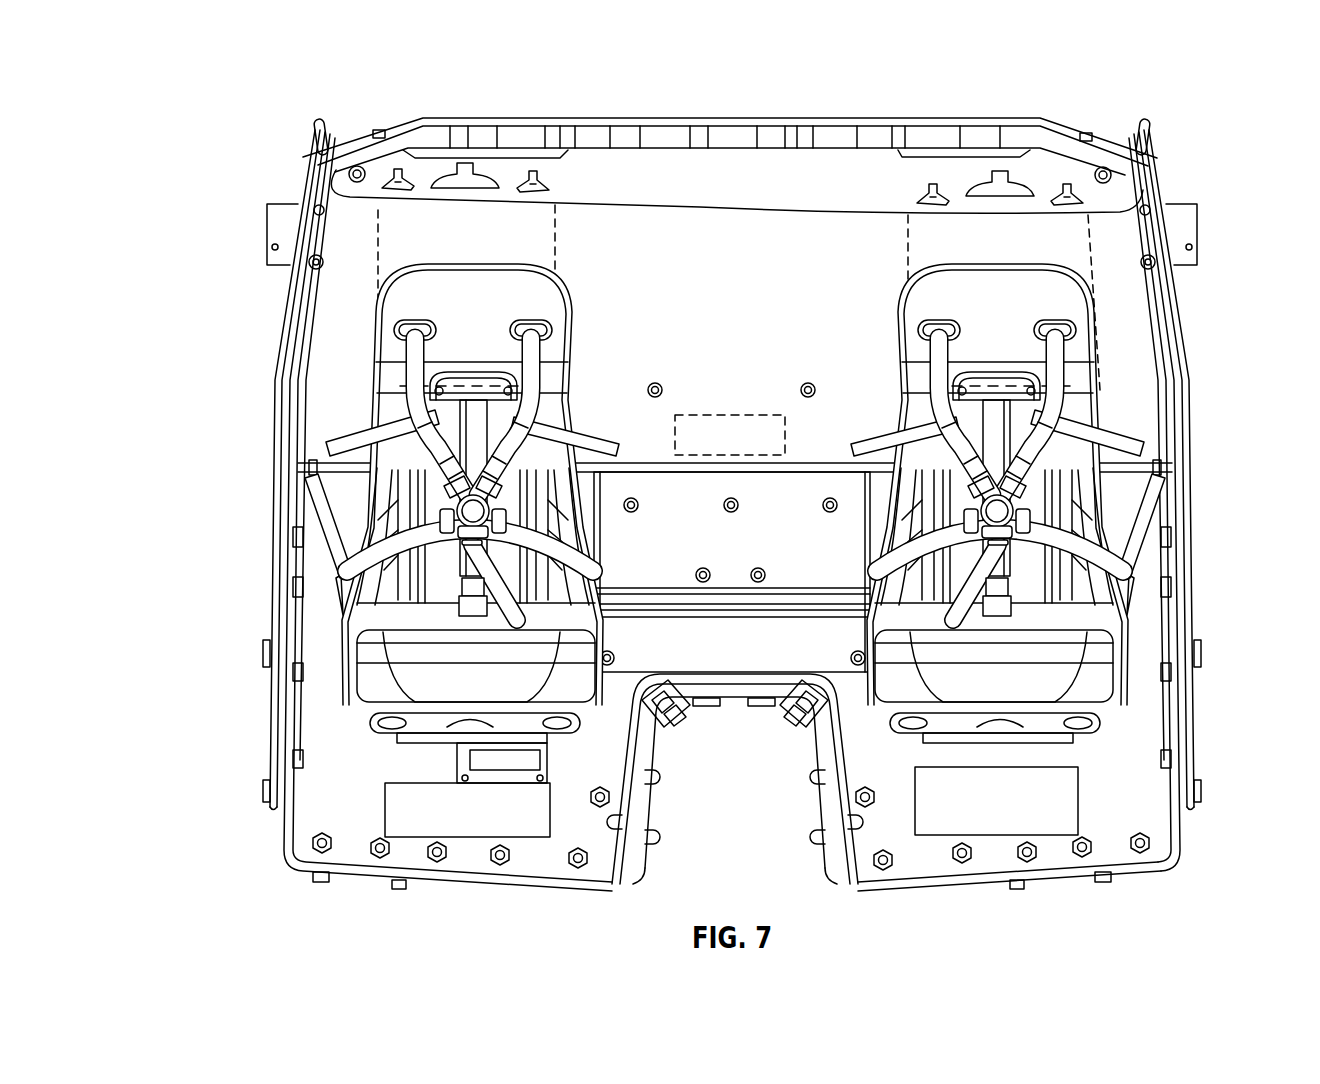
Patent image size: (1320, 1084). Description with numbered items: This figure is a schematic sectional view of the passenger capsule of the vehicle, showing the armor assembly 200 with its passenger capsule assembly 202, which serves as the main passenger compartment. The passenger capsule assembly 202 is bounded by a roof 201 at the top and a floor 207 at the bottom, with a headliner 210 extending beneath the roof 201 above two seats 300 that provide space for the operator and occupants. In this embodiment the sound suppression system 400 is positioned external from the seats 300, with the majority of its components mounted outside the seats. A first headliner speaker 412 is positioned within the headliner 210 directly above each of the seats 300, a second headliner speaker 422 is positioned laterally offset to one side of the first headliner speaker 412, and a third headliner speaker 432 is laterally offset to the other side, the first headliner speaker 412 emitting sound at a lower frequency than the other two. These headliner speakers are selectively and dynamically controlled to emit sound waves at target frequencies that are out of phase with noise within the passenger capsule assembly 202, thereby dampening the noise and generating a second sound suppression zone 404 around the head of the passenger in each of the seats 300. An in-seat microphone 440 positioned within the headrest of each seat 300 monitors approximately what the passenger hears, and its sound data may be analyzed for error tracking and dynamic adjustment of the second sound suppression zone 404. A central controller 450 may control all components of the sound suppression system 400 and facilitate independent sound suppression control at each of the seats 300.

The armor assembly 200 is at (246, 78).
The roof 201 is at (815, 118).
The passenger capsule assembly 202 is at (1160, 178).
The floor 207 is at (1000, 887).
The headliner 210 is at (700, 207).
The seats 300 is at (590, 270).
The sound suppression system 400 is at (922, 175).
The second sound suppression zone 404 is at (556, 245).
The first headliner speaker 412 is at (465, 163).
The second headliner speaker 422 is at (550, 182).
The third headliner speaker 432 is at (398, 170).
The in-seat microphone 440 is at (498, 308).
The controller 450 is at (735, 415).